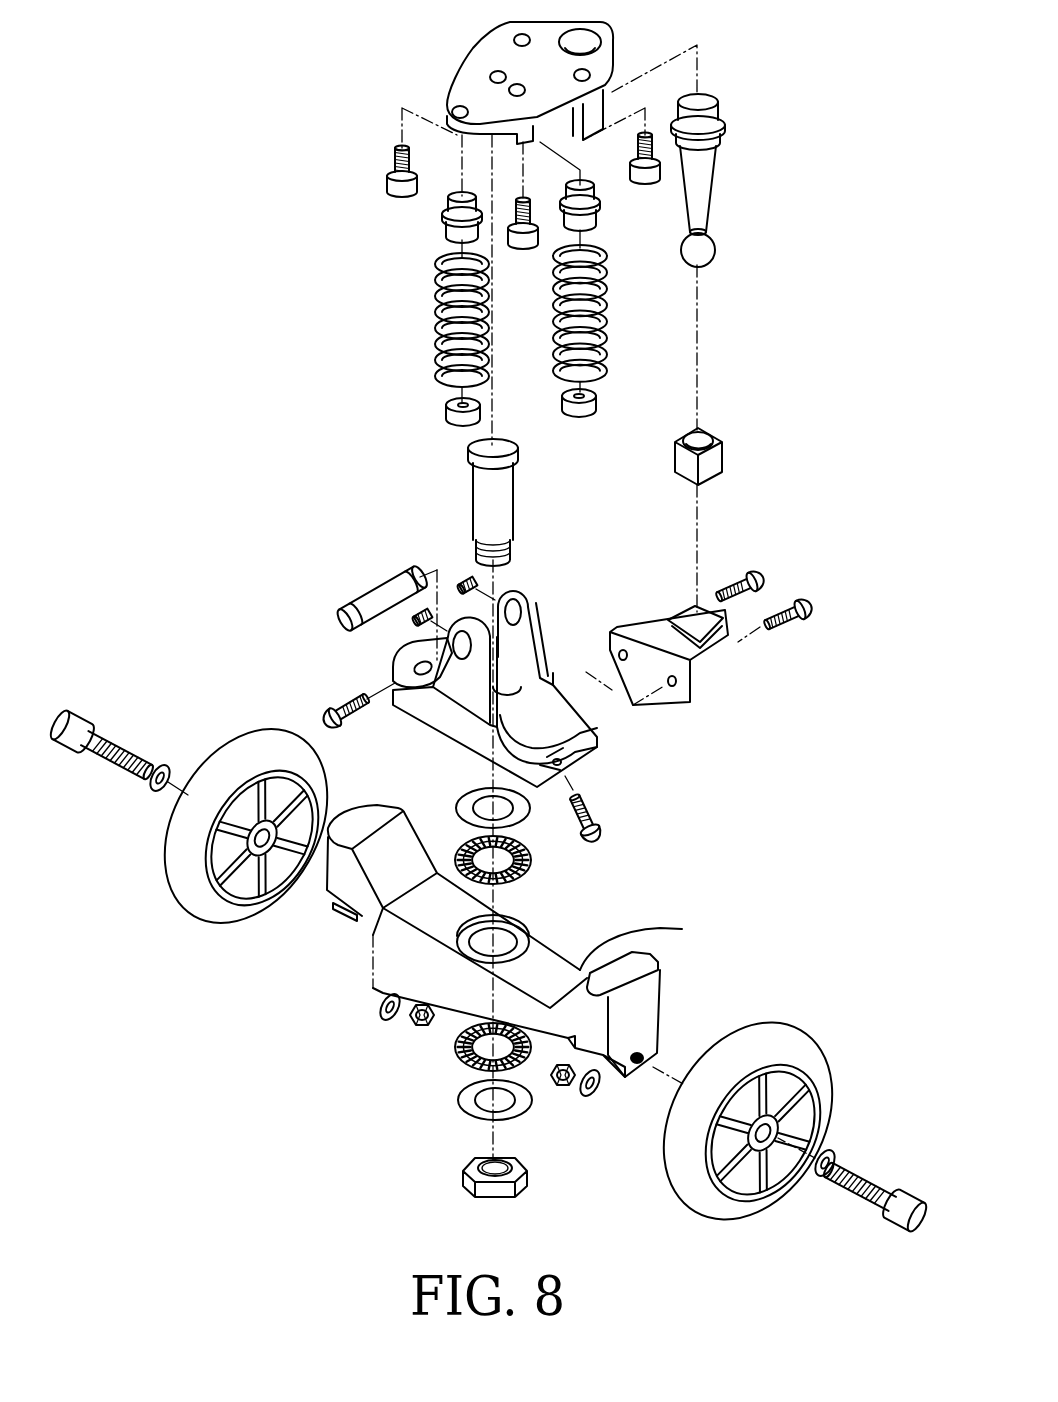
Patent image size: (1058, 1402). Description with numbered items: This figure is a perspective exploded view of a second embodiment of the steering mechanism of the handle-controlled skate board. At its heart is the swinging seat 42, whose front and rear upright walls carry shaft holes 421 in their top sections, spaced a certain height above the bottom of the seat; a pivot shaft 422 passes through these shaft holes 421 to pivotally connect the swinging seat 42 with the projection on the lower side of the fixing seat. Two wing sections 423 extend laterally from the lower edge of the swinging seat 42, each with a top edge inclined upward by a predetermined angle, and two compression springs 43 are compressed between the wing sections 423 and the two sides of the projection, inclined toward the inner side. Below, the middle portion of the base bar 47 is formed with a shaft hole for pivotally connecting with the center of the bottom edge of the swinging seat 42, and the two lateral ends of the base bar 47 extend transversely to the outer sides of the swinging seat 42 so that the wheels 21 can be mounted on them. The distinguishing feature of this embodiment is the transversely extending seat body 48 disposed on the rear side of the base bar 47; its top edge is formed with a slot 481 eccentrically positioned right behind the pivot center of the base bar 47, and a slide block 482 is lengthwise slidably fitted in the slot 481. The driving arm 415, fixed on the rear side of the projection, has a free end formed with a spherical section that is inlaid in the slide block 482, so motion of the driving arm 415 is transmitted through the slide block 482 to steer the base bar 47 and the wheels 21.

The wheels 21 is at (765, 1040).
The swinging seat 42 is at (462, 727).
The compression springs 43 is at (440, 307).
The base bar 47 is at (585, 973).
The seat body 48 is at (715, 609).
The driving arm 415 is at (703, 180).
The shaft holes 421 is at (465, 525).
The pivot shaft 422 is at (378, 598).
The wing sections 423 is at (590, 757).
The slot 481 is at (690, 627).
The slide block 482 is at (712, 463).